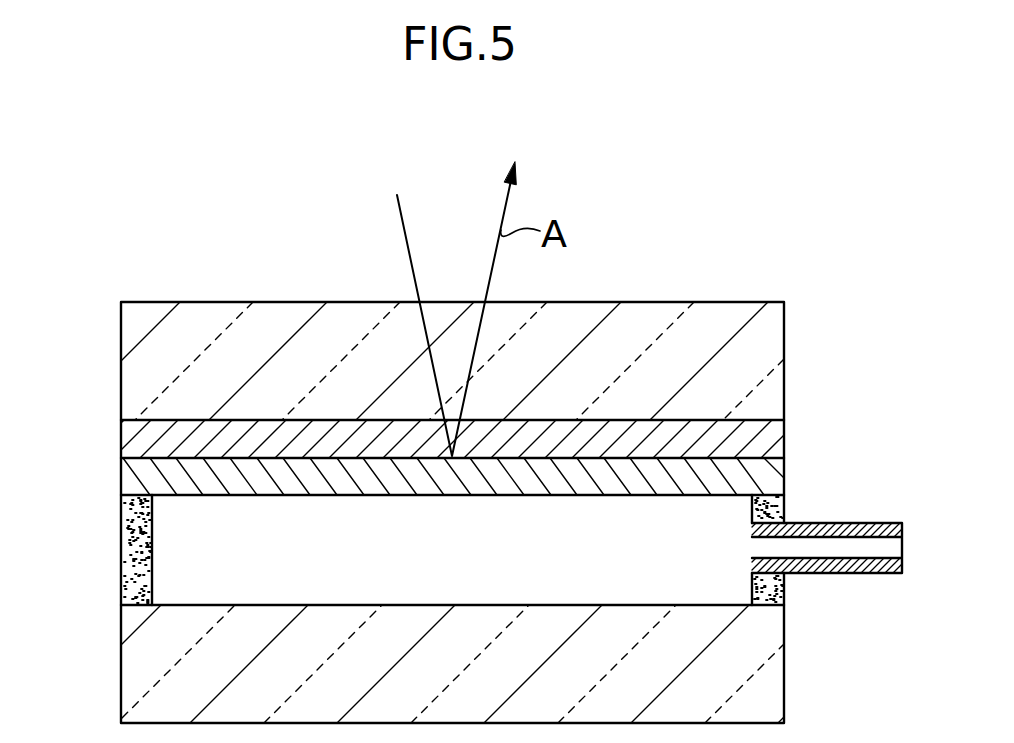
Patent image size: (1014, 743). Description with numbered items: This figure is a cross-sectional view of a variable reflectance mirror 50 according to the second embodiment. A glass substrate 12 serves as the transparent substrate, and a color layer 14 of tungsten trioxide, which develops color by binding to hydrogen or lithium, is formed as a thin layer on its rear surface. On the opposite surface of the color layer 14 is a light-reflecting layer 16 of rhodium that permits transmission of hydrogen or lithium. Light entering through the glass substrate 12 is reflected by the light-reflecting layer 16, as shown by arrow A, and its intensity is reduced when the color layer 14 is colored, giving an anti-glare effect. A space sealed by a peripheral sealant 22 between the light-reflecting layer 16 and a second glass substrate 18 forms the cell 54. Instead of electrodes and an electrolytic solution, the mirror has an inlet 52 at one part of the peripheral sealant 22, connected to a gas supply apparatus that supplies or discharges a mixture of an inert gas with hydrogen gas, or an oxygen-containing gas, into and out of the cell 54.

The glass substrate 12 is at (132, 353).
The color layer 14 is at (135, 436).
The light-reflecting layer 16 is at (132, 478).
The glass substrate 18 is at (132, 670).
The peripheral sealant 22 is at (127, 537).
The variable reflectance mirror 50 is at (690, 214).
The inlet 52 is at (892, 522).
The cell 54 is at (177, 584).